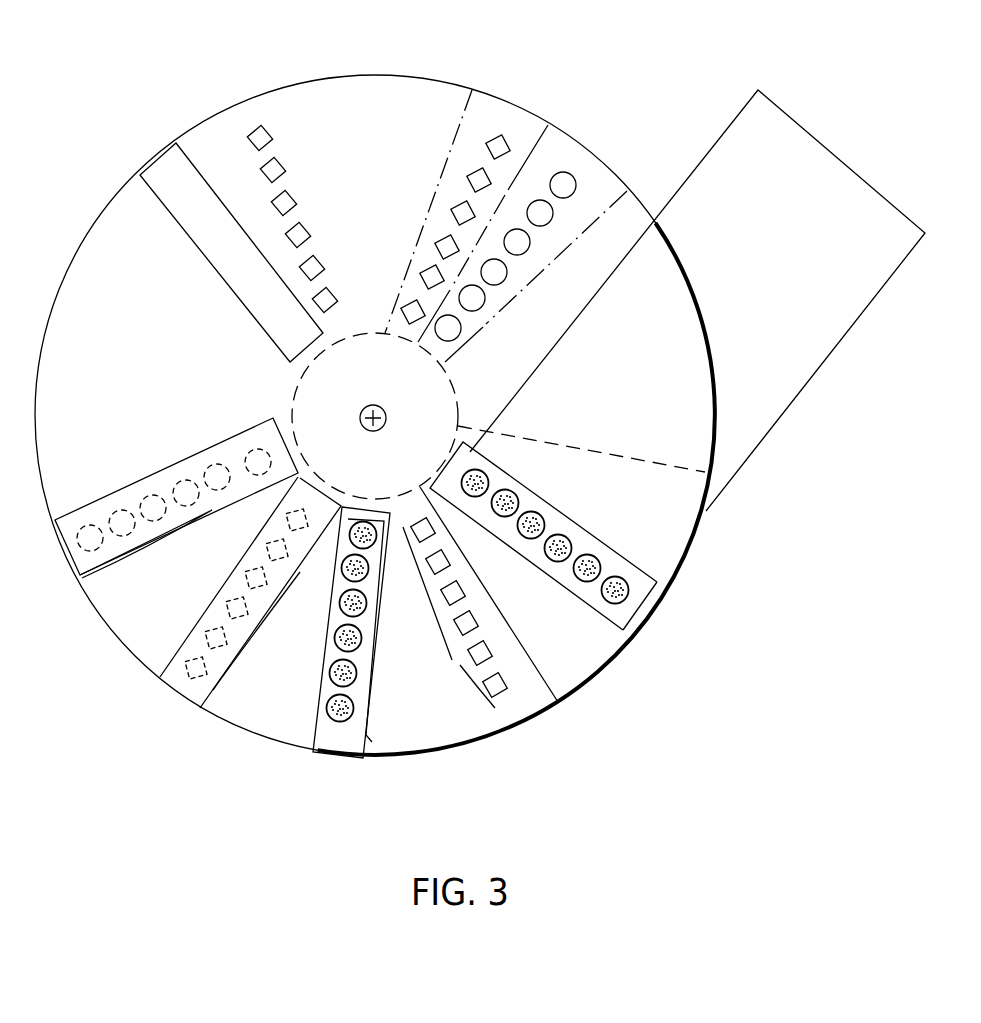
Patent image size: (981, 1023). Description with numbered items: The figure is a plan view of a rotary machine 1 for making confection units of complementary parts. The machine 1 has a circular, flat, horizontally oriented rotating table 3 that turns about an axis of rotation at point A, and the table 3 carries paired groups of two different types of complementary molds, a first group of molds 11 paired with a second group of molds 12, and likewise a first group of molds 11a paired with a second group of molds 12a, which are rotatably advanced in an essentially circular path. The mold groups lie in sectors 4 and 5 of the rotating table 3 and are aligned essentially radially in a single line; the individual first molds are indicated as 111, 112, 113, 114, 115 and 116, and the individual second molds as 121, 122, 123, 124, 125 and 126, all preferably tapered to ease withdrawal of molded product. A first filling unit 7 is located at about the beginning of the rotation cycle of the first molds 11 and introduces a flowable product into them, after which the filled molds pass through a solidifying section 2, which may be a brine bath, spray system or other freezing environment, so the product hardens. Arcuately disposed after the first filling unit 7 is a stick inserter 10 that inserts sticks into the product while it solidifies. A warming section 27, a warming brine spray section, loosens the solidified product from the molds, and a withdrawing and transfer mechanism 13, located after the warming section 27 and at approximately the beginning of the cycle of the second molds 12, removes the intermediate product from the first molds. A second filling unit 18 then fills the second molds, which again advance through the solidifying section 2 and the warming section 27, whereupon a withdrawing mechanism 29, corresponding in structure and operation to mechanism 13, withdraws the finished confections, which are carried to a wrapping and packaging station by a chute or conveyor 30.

The machine 1 is at (233, 66).
The solidifying section 2 is at (120, 313).
The rotating table 3 is at (472, 90).
The sector 4 is at (573, 156).
The sector 5 is at (508, 115).
The stick inserter 10 is at (203, 248).
The chute or conveyor 30 is at (770, 232).
The axis of rotation A is at (387, 408).
The first filling unit 7 is at (80, 560).
The individual mold 121 is at (262, 450).
The individual mold 122 is at (227, 470).
The individual mold 123 is at (190, 485).
The individual mold 124 is at (153, 502).
The individual mold 125 is at (117, 517).
The individual mold 126 is at (87, 528).
The second group of molds 12 is at (212, 512).
The withdrawing and transfer mechanism 13 is at (168, 678).
The first group of molds 11 is at (302, 572).
The individual mold 111 is at (297, 507).
The individual mold 112 is at (263, 552).
The individual mold 113 is at (238, 580).
The individual mold 114 is at (215, 608).
The individual mold 115 is at (197, 640).
The individual mold 116 is at (178, 664).
The second filling unit 18 is at (320, 727).
The second group of molds 12a is at (385, 615).
The first group of molds 11a is at (452, 662).
The warming section 27 is at (549, 645).
The withdrawing mechanism 29 is at (627, 614).